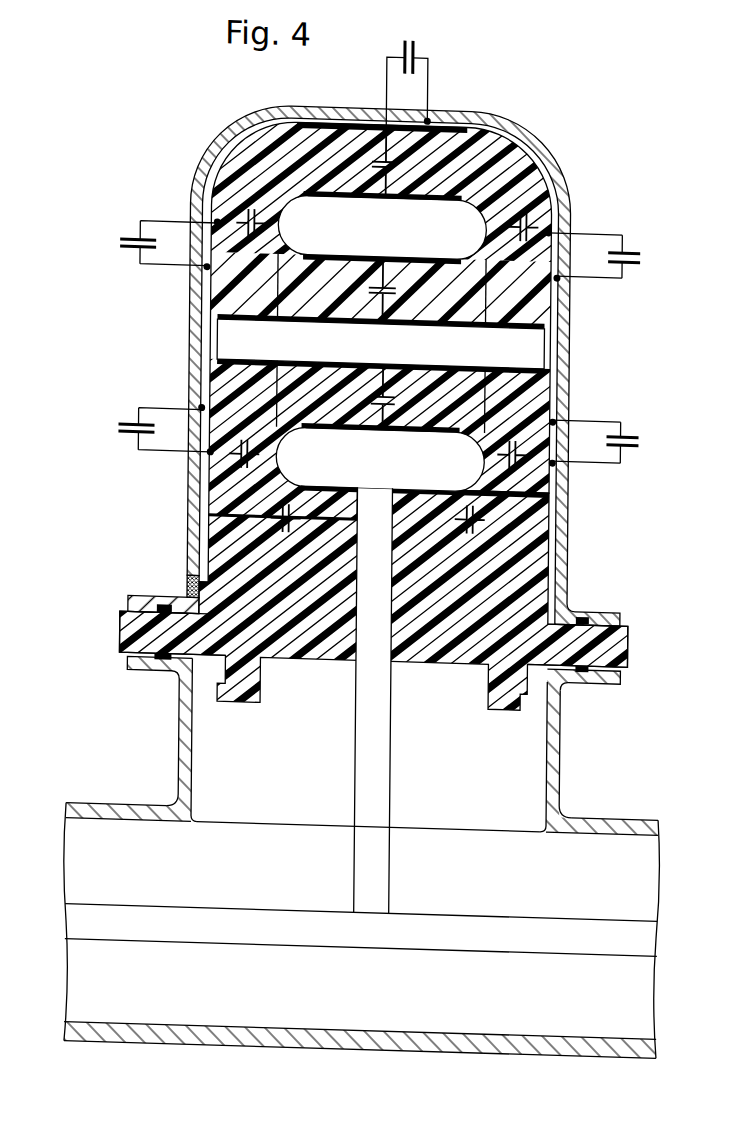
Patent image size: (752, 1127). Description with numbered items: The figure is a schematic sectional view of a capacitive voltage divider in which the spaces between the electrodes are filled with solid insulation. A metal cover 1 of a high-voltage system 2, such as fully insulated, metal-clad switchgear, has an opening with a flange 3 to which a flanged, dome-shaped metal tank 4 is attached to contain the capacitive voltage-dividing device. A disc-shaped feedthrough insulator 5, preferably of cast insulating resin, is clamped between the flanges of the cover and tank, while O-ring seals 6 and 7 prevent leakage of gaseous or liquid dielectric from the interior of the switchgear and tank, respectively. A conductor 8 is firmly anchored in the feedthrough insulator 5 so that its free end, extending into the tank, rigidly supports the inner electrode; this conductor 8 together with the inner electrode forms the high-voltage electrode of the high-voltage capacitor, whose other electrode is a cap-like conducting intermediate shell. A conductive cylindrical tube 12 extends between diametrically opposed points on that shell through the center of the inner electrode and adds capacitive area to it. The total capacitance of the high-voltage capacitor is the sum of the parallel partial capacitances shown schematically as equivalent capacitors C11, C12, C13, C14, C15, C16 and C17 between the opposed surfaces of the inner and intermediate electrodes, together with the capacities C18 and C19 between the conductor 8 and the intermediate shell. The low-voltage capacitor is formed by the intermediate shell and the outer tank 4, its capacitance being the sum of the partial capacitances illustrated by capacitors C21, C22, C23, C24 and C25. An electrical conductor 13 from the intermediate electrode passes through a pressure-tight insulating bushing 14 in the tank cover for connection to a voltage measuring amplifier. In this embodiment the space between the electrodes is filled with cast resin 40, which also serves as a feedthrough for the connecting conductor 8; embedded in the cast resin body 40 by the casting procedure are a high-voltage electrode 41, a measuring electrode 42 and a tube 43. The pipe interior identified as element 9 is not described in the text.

The metal cover 1 is at (112, 820).
The high-voltage system 2 is at (93, 989).
The flange 3 is at (178, 669).
The dome-shaped metal tank 4 is at (214, 525).
The feedthrough insulator 5 is at (120, 631).
The O-ring seal 6 is at (151, 675).
The O-ring seal 7 is at (175, 606).
The conductor 8 is at (379, 757).
The pipe channel 9 is at (455, 923).
The conductive cylindrical tube 12 is at (538, 372).
The electrical conductor 13 is at (183, 589).
The insulating bushing 14 is at (190, 583).
The cast resin body 40 is at (508, 606).
The high-voltage electrode 41 is at (304, 217).
The measuring electrode 42 is at (534, 163).
The tube 43 is at (527, 308).
The equivalent capacitor C11 is at (228, 217).
The equivalent capacitor C12 is at (376, 157).
The equivalent capacitor C13 is at (548, 205).
The equivalent capacitor C14 is at (362, 296).
The equivalent capacitor C15 is at (238, 441).
The equivalent capacitor C16 is at (373, 398).
The equivalent capacitor C17 is at (541, 405).
The equivalent capacitor C18 is at (522, 529).
The equivalent capacitor C19 is at (284, 510).
The equivalent capacitor C21 is at (154, 238).
The equivalent capacitor C22 is at (427, 80).
The equivalent capacitor C23 is at (609, 255).
The equivalent capacitor C24 is at (151, 427).
The equivalent capacitor C25 is at (612, 440).